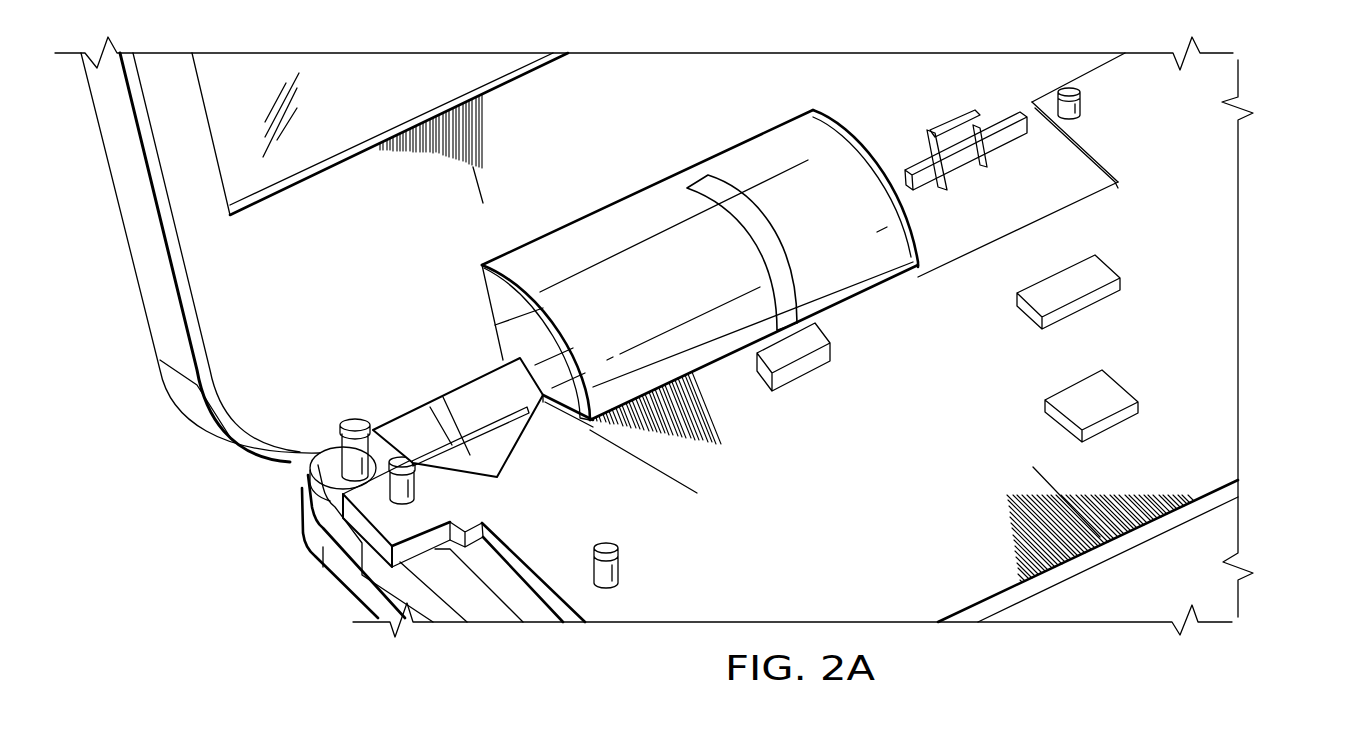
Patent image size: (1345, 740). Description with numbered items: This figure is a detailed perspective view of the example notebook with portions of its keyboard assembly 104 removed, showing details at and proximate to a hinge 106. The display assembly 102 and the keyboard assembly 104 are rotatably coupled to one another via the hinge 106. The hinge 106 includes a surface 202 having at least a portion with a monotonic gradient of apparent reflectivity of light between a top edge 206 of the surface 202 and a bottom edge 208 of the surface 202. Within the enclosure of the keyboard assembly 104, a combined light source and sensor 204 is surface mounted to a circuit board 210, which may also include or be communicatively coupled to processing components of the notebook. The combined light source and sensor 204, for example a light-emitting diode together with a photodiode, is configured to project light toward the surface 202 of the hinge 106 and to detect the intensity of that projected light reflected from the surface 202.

The display assembly 102 is at (152, 288).
The keyboard assembly 104 is at (343, 575).
The hinge 106 is at (510, 294).
The surface 202 is at (587, 235).
The combined light source and sensor 204 is at (805, 365).
The top edge 206 is at (715, 168).
The bottom edge 208 is at (813, 303).
The circuit board 210 is at (1222, 378).